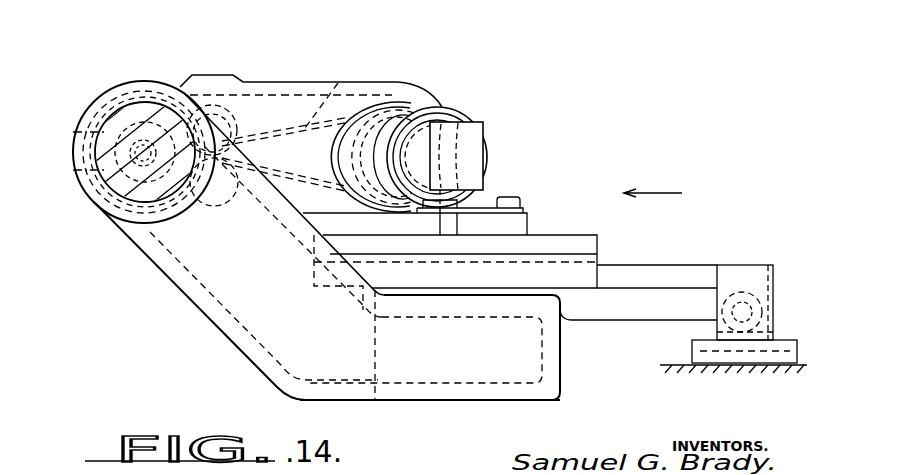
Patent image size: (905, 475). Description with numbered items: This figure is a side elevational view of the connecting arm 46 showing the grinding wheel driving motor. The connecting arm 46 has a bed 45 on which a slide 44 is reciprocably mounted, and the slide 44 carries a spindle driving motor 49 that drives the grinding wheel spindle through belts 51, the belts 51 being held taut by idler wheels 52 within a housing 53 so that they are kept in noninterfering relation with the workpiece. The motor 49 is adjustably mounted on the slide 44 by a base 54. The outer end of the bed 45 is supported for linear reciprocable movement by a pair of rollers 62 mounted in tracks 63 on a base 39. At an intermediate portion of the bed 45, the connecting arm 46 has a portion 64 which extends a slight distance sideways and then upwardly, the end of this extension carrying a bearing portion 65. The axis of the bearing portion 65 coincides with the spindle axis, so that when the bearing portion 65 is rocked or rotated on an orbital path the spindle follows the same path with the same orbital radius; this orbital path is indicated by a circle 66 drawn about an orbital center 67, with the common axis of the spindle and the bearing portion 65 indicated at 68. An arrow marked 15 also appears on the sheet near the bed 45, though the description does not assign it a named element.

The direction of movement 15 is at (690, 187).
The base 39 is at (681, 363).
The slide 44 is at (570, 241).
The bed 45 is at (609, 306).
The connecting arm 46 is at (522, 404).
The spindle driving motor 49 is at (473, 135).
The belts 51 is at (326, 84).
The idler wheels 52 is at (248, 93).
The housing 53 is at (280, 82).
The base 54 is at (518, 228).
The rollers 62 is at (717, 335).
The tracks 63 is at (756, 356).
The portion 64 is at (352, 405).
The bearing portion 65 is at (110, 92).
The circle 66 is at (155, 93).
The orbital center 67 is at (137, 198).
The axis of spindle and connecting arm bearing portion 68 is at (130, 173).